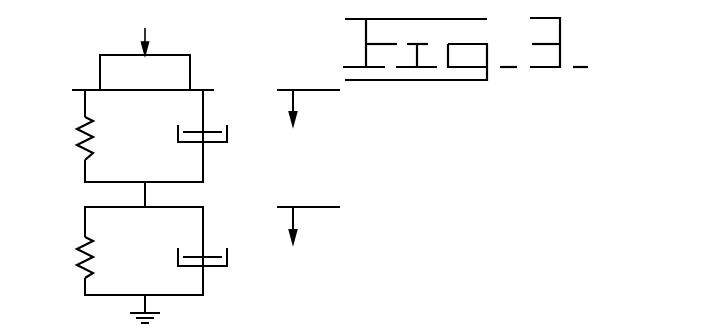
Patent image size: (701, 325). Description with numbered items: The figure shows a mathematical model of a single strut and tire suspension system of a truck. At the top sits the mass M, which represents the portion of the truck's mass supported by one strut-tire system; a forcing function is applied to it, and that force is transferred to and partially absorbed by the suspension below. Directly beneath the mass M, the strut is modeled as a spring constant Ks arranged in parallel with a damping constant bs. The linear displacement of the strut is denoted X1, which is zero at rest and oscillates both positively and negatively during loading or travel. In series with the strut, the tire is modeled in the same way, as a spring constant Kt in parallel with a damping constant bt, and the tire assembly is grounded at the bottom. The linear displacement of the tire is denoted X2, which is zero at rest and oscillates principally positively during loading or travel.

The mass M is at (145, 72).
The spring constant of the strut Ks is at (65, 138).
The damping constant of the strut bs is at (219, 137).
The spring constant of the tire Kt is at (65, 257).
The damping constant of the tire bt is at (218, 260).
The linear displacement of the strut X1 is at (308, 111).
The linear displacement of the tire X2 is at (308, 232).